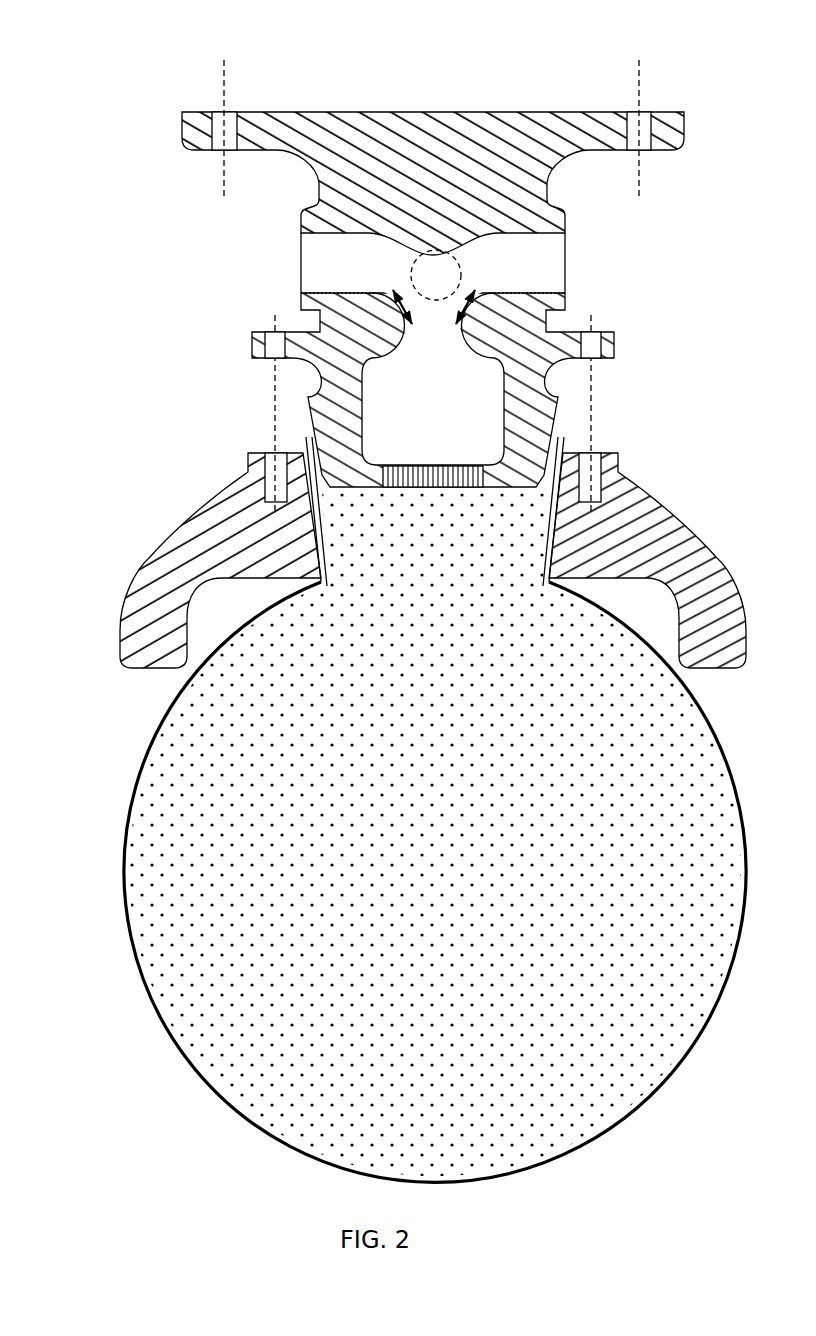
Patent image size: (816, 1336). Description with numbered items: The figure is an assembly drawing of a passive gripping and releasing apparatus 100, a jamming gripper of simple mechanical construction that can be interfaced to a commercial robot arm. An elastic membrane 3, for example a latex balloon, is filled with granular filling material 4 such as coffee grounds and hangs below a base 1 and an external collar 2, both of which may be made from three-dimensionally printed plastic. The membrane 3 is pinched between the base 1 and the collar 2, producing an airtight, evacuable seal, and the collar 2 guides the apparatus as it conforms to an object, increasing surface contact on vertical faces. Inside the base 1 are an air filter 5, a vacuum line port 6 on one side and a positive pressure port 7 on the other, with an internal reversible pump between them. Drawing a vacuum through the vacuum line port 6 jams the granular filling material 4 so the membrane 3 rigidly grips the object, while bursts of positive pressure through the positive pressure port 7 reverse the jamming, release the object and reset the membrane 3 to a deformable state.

The passive gripping and releasing apparatus 100 is at (541, 62).
The base 1 is at (433, 157).
The external collar 2 is at (680, 512).
The elastic membrane 3 is at (136, 775).
The granular filling material 4 is at (435, 832).
The air filter 5 is at (433, 388).
The vacuum line port 6 is at (297, 270).
The positive pressure port 7 is at (572, 270).